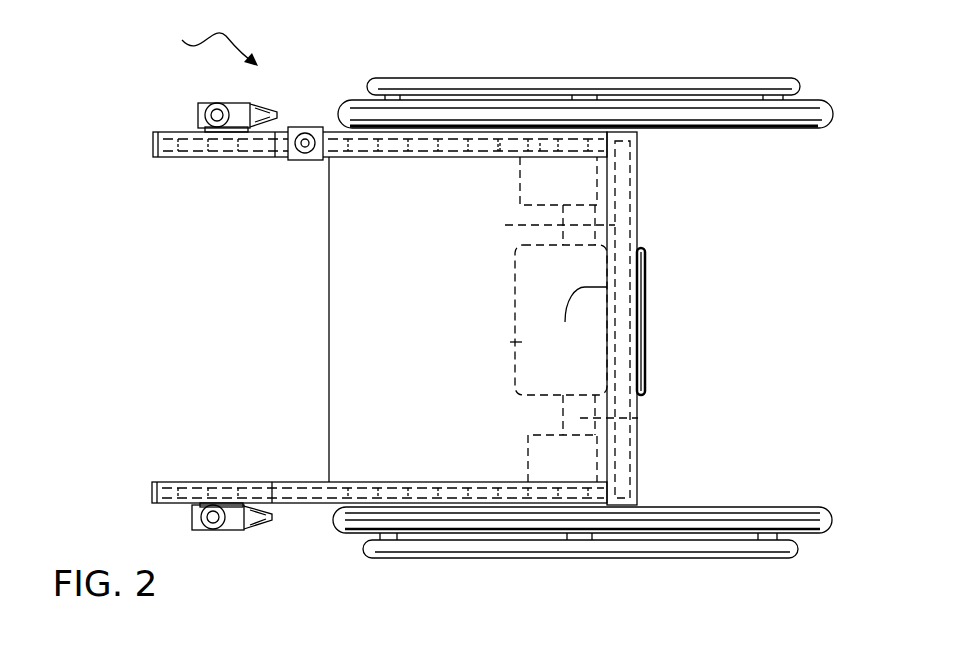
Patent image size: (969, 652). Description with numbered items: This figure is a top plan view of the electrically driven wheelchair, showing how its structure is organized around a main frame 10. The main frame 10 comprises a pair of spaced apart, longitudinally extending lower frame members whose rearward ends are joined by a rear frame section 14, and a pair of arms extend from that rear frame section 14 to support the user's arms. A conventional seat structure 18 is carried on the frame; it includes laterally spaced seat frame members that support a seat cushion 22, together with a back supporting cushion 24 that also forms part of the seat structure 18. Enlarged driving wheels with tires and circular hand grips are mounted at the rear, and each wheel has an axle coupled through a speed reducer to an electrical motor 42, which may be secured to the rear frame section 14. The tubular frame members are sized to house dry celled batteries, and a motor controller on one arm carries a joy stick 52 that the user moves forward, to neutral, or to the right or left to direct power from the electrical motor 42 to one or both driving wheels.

The main frame 10 is at (276, 466).
The rear frame section 14 is at (633, 236).
The seat structure 18 is at (364, 270).
The seat cushion 22 is at (515, 320).
The back supporting cushion 24 is at (578, 320).
The electrical motor 42 is at (524, 343).
The joy stick 52 is at (307, 139).